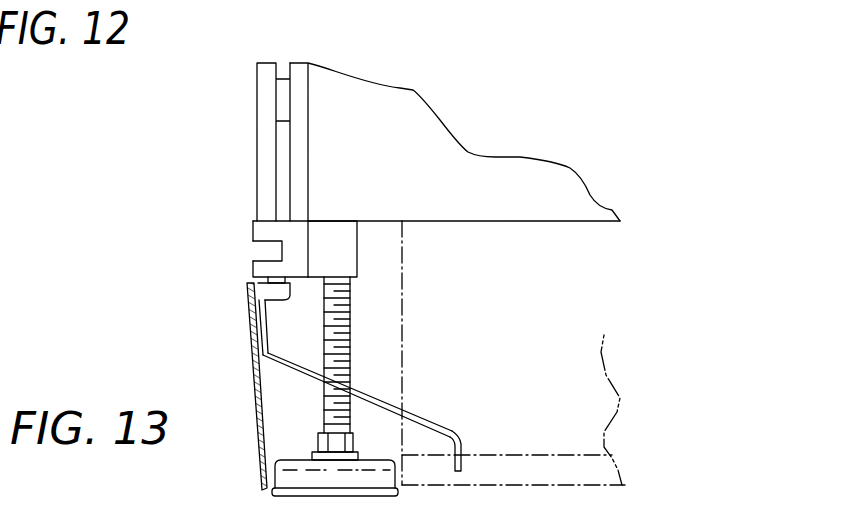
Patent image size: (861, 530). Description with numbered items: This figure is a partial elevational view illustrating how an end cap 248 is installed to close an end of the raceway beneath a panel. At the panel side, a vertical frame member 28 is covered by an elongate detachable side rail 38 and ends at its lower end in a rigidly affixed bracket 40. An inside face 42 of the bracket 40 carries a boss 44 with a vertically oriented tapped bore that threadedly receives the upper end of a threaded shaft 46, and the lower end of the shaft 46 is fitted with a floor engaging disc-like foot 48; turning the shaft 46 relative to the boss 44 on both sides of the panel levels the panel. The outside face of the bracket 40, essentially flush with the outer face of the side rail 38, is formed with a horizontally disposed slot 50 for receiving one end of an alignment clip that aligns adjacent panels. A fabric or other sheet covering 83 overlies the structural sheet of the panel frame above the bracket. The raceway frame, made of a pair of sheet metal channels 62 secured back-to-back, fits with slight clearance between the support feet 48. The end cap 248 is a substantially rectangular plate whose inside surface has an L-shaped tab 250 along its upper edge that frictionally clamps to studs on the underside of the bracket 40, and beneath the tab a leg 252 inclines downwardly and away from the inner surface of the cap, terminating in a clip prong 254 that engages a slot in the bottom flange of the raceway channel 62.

The side vertical frame member 28 is at (310, 62).
The side rail 38 is at (259, 62).
The bracket 40 is at (252, 233).
The inside face 42 is at (309, 240).
The boss 44 is at (357, 247).
The threaded shaft 46 is at (349, 309).
The foot 48 is at (303, 481).
The slot 50 is at (254, 250).
The sheet metal channel 62 is at (480, 489).
The sheet covering 83 is at (436, 162).
The end cap 248 is at (256, 386).
The L-shaped tab 250 is at (252, 306).
The leg 252 is at (392, 384).
The clip prong 254 is at (462, 448).